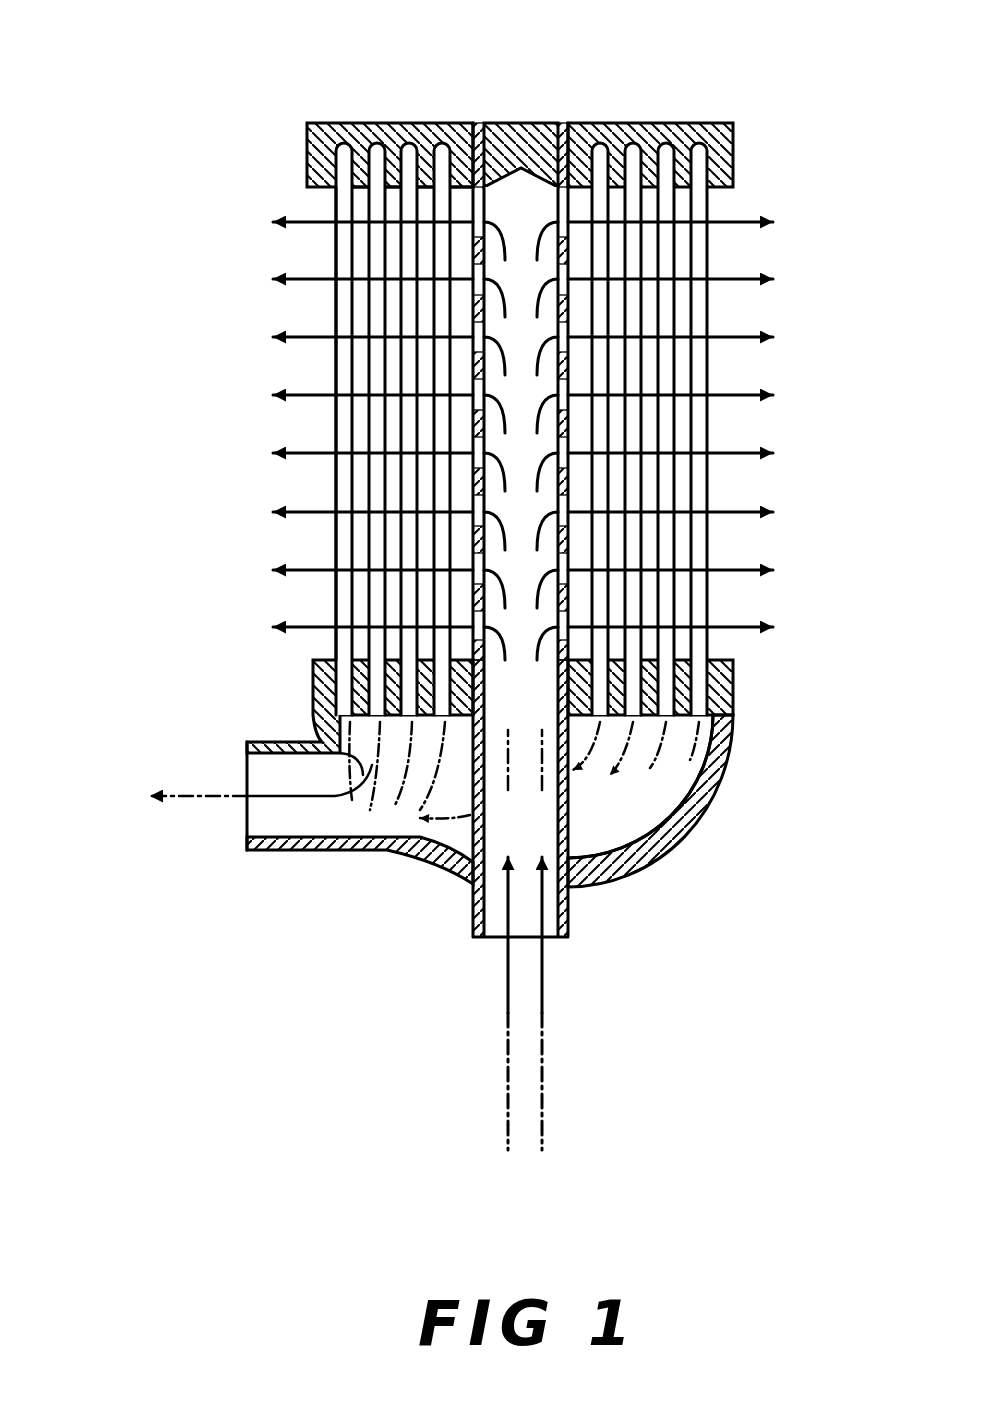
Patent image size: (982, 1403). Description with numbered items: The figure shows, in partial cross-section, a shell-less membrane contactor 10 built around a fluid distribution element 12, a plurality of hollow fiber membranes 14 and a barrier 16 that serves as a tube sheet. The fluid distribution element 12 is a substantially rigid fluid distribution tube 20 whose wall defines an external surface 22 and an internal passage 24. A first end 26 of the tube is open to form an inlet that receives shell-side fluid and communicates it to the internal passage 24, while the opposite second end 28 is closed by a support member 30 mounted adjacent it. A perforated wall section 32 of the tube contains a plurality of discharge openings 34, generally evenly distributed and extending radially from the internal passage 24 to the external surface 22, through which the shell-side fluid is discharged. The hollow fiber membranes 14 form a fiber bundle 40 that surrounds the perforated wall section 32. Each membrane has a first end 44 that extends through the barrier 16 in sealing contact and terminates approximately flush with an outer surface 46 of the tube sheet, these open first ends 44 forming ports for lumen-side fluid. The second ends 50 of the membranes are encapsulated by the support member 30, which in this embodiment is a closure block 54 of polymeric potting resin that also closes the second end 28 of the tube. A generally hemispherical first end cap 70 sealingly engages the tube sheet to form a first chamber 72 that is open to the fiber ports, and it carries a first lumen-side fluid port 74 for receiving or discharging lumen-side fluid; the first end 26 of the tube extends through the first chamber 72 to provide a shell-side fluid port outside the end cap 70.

The shell-less membrane contactor 10 is at (138, 50).
The fluid distribution element 12 is at (578, 307).
The hollow fiber membrane 14 is at (700, 415).
The barrier 16 is at (735, 678).
The fluid distribution tube 20 is at (572, 598).
The external surface 22 is at (568, 250).
The internal passage 24 is at (538, 414).
The first end 26 is at (568, 940).
The second end 28 is at (560, 123).
The support member 30 is at (310, 123).
The perforated wall section 32 is at (568, 353).
The discharge openings 34 is at (568, 462).
The fiber bundle 40 is at (330, 210).
The first end 44 is at (405, 770).
The outer surface 46 is at (636, 748).
The second ends 50 is at (420, 123).
The closure block 54 is at (712, 123).
The first end cap 70 is at (712, 795).
The first chamber 72 is at (630, 810).
The first lumen-side fluid port 74 is at (318, 825).